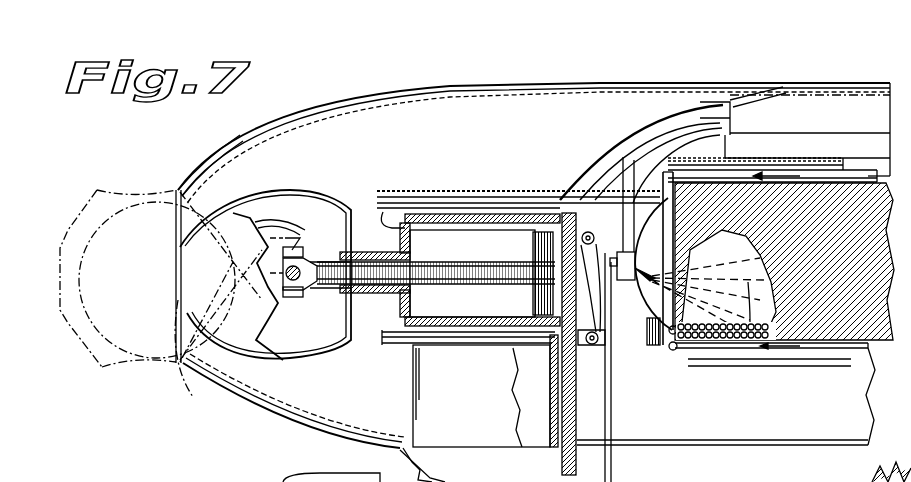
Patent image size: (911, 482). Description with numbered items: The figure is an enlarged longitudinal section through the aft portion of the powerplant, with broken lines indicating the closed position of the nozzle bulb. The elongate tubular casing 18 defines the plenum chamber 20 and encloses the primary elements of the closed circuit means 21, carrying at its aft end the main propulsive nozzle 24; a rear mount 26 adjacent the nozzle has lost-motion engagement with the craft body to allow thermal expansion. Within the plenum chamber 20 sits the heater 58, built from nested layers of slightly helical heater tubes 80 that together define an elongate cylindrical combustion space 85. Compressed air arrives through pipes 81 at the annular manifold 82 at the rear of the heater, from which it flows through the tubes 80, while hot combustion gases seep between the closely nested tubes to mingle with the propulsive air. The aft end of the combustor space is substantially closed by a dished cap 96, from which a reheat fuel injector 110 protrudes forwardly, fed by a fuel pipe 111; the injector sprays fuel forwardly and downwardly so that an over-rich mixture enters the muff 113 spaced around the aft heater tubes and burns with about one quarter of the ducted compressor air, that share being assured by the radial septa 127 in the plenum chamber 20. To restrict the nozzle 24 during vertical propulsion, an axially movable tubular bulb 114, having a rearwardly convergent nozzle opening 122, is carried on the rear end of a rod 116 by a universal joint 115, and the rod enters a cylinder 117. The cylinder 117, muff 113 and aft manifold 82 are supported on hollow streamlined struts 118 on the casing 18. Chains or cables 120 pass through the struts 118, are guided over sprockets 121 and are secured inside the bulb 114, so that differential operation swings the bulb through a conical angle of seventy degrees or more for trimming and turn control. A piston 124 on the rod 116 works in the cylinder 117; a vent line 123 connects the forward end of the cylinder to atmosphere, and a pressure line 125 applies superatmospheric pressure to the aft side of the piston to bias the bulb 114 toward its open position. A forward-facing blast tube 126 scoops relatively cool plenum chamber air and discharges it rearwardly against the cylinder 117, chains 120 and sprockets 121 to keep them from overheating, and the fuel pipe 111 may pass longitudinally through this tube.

The casing 18 is at (660, 83).
The plenum chamber 20 is at (855, 100).
The closed circuit means 21 is at (874, 141).
The main propulsive nozzle 24 is at (213, 162).
The rear mount 26 is at (458, 452).
The heater 58 is at (838, 338).
The heater tubes 80 is at (762, 352).
The pipes 81 is at (330, 465).
The annular manifold 82 is at (676, 178).
The combustion space 85 is at (728, 325).
The dished plate or cap 96 is at (610, 340).
The fuel injector 110 is at (648, 282).
The fuel pipe 111 is at (785, 83).
The muff 113 is at (782, 158).
The nozzle bulb 114 is at (318, 194).
The universal joint 115 is at (276, 250).
The rod 116 is at (357, 262).
The cylinder 117 is at (452, 214).
The hollow streamlined struts 118 is at (472, 404).
The chains or cables 120 is at (612, 370).
The sprockets 121 is at (606, 215).
The nozzle opening 122 is at (195, 395).
The vent line 123 is at (556, 470).
The piston 124 is at (540, 280).
The pressure line 125 is at (535, 178).
The blast tube 126 is at (618, 140).
The septa 127 is at (810, 135).